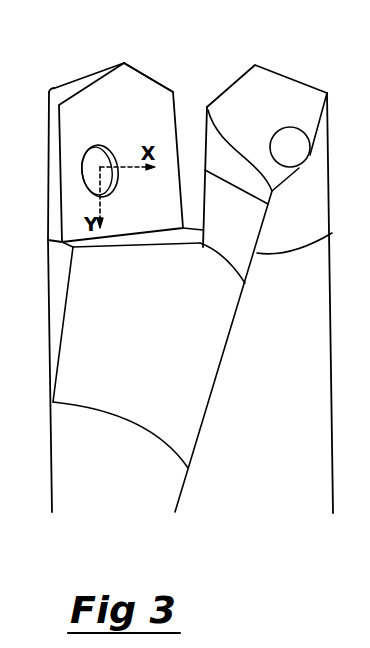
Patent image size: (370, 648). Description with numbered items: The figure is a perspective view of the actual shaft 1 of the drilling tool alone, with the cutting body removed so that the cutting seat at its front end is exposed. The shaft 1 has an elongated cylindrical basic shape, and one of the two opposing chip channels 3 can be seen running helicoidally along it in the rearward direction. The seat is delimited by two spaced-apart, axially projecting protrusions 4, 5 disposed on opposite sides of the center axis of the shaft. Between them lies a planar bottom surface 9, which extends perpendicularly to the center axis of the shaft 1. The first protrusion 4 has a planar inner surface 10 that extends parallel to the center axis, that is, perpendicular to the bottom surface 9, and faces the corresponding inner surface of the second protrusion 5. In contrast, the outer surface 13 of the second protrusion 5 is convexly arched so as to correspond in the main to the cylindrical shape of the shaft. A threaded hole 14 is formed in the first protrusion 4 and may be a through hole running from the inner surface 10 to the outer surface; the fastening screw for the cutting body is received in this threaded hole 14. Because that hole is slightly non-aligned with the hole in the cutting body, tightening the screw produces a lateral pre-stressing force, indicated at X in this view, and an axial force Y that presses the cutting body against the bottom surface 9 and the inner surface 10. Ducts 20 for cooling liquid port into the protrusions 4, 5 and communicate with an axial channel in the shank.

The shaft 1 is at (333, 395).
The chip channel 3 is at (188, 412).
The first protrusion 4 is at (150, 73).
The second protrusion 5 is at (333, 158).
The bottom surface 9 is at (153, 237).
The inner surface 10 is at (147, 112).
The outer surface 13 is at (295, 235).
The threaded hole 14 is at (93, 155).
The duct 20 is at (292, 127).